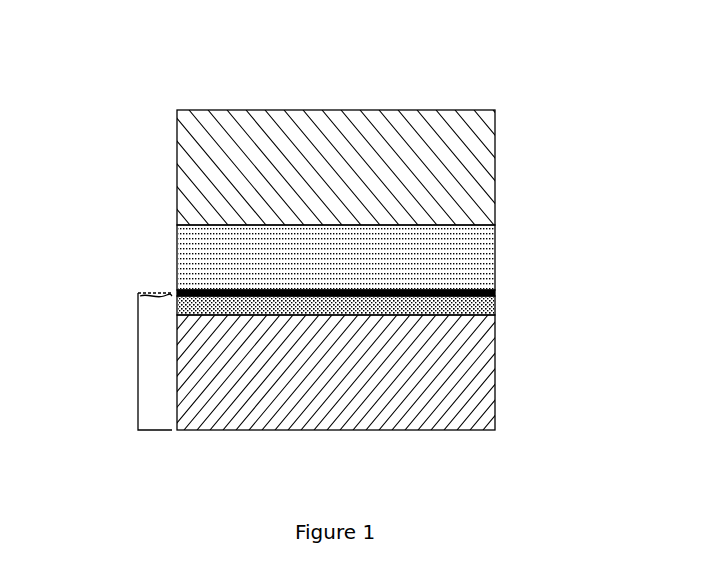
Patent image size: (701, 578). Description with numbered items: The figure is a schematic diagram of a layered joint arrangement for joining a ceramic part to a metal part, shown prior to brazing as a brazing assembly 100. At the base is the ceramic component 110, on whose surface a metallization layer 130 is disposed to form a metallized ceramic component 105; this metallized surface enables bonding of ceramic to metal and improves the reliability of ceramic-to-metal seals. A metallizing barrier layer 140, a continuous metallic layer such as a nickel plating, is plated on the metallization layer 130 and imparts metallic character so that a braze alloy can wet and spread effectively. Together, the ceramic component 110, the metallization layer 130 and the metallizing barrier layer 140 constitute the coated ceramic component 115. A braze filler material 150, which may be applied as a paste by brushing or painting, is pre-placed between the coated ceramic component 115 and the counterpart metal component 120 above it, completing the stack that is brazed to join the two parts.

The brazing assembly 100 is at (163, 80).
The metallized ceramic component 105 is at (138, 408).
The ceramic component 110 is at (496, 367).
The coated ceramic component 115 is at (138, 292).
The metal component 120 is at (177, 158).
The metallization layer 130 is at (497, 297).
The metallizing barrier layer 140 is at (497, 289).
The braze filler material 150 is at (496, 251).